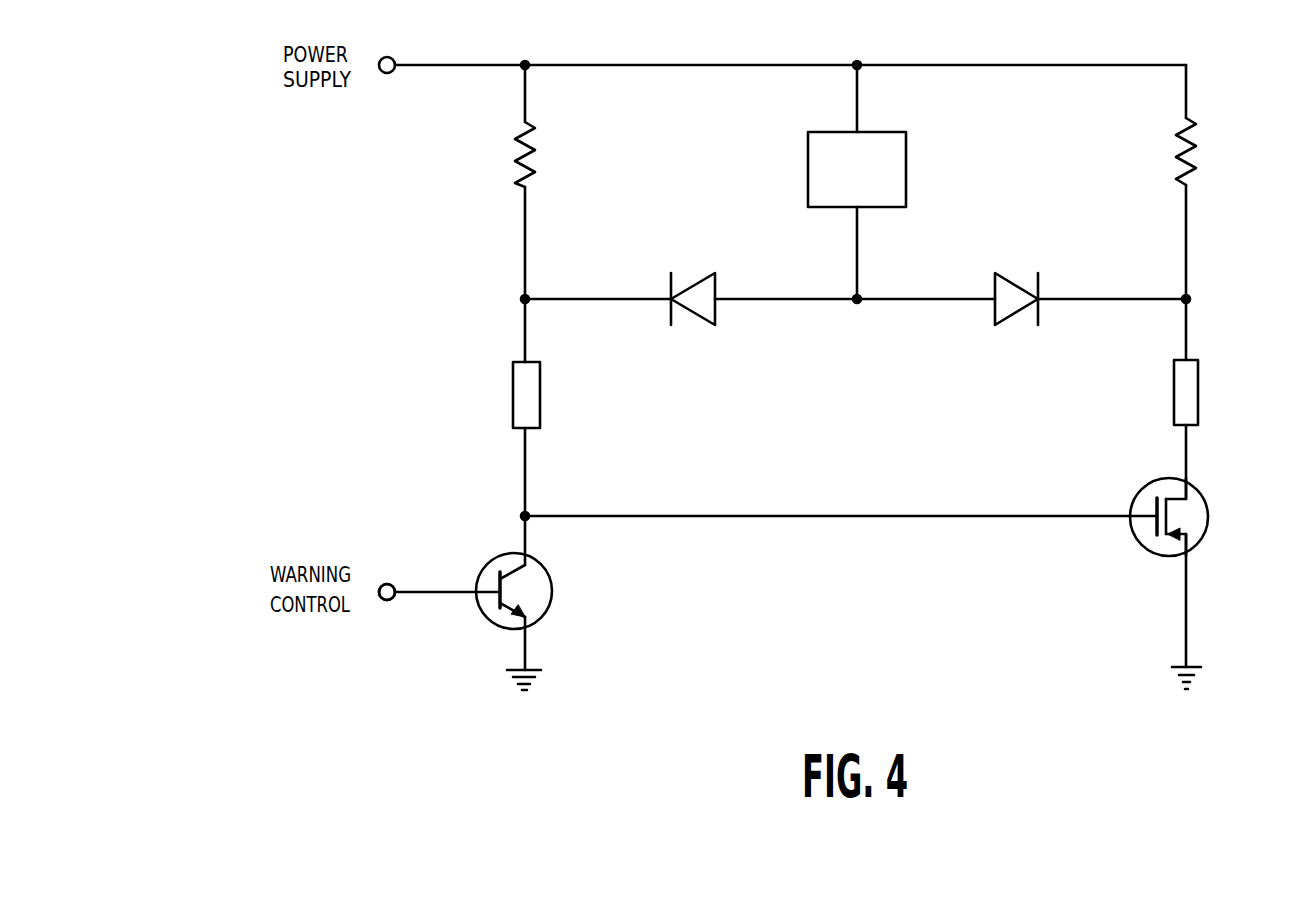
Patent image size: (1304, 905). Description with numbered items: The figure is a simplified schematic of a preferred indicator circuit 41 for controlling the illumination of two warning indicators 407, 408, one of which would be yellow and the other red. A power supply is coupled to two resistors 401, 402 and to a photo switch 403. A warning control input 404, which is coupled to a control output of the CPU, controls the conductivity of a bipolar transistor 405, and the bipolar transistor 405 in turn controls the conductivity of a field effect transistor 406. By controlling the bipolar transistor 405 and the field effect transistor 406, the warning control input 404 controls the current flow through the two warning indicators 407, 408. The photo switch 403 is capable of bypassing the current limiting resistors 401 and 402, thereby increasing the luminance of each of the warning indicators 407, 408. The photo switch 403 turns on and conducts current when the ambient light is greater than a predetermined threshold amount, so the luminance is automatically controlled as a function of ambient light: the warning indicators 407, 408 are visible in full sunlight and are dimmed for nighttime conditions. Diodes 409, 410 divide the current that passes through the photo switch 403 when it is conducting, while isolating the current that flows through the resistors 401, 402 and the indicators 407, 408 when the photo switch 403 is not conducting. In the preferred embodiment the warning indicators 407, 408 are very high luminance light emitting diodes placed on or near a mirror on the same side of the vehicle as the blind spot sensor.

The indicator circuit 41 is at (262, 278).
The resistor 401 is at (534, 148).
The resistor 402 is at (1195, 145).
The photo switch 403 is at (897, 132).
The warning control input 404 is at (392, 586).
The bipolar transistor 405 is at (553, 582).
The field effect transistor 406 is at (1207, 531).
The warning indicator 407 is at (516, 362).
The warning indicator 408 is at (1188, 359).
The diode 409 is at (704, 323).
The diode 410 is at (1001, 322).